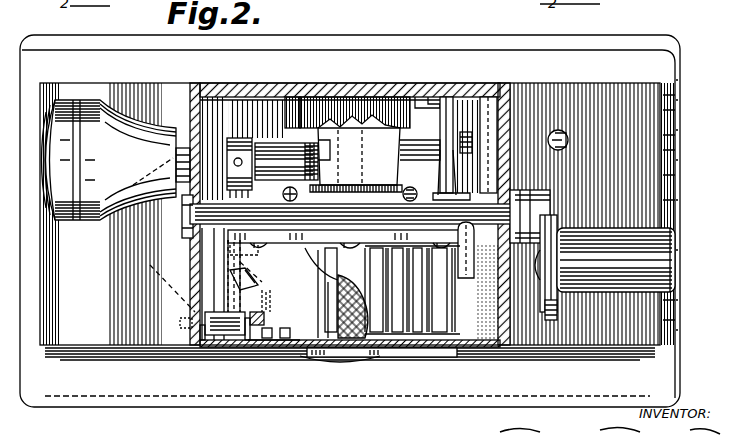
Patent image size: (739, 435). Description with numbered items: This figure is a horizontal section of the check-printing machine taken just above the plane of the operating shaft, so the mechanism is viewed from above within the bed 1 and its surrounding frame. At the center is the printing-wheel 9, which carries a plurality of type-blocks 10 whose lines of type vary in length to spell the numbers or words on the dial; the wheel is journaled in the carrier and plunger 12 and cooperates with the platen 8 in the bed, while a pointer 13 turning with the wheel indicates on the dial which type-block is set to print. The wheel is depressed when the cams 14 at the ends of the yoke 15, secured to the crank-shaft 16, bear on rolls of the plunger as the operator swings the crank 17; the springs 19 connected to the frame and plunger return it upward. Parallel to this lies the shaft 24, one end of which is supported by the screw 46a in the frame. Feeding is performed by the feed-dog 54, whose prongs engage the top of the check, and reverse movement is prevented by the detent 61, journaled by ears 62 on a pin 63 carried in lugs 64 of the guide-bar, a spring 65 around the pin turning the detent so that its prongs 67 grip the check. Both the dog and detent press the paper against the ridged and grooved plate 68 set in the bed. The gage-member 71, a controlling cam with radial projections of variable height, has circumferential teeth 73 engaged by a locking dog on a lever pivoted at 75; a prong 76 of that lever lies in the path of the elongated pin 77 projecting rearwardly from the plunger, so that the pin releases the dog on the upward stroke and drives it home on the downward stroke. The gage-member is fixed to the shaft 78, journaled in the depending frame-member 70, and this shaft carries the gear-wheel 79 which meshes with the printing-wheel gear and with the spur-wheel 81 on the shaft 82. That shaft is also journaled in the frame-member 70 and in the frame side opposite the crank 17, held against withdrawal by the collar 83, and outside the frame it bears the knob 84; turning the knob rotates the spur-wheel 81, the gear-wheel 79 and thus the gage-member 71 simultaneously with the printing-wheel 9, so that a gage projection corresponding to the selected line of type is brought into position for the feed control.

The bed 1 is at (264, 412).
The platen 8 is at (359, 338).
The printing-wheel 9 is at (425, 330).
The type-blocks 10 is at (397, 322).
The carrier and plunger 12 is at (344, 236).
The pointer 13 is at (461, 348).
The cams 14 is at (233, 247).
The yoke 15 is at (260, 283).
The crank-shaft 16 is at (210, 228).
The crank 17 is at (553, 322).
The springs 19 is at (296, 210).
The shaft 24 is at (413, 152).
The screw 46a is at (565, 133).
The feed-dog 54 is at (262, 305).
The detent 61 is at (276, 329).
The ears 62 is at (262, 304).
The pin 63 is at (223, 348).
The lugs 64 is at (198, 346).
The spring 65 is at (266, 314).
The prongs 67 is at (252, 346).
The plate 68 is at (313, 330).
The depending frame-member 70 is at (359, 156).
The gage-member 71 is at (290, 97).
The teeth 73 is at (320, 97).
The pivot 75 is at (416, 99).
The prong 76 is at (447, 97).
The pin 77 is at (446, 170).
The shaft 78 is at (352, 117).
The gear-wheel 79 is at (345, 185).
The spur-wheel 81 is at (322, 153).
The shaft 82 is at (304, 153).
The collar 83 is at (236, 150).
The knob 84 is at (116, 160).